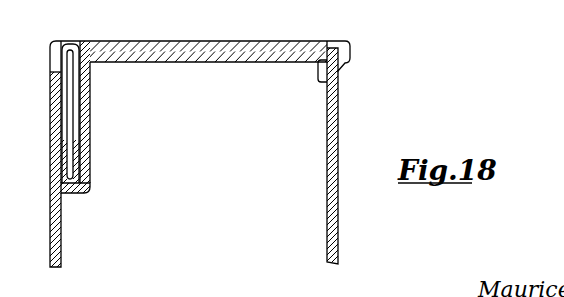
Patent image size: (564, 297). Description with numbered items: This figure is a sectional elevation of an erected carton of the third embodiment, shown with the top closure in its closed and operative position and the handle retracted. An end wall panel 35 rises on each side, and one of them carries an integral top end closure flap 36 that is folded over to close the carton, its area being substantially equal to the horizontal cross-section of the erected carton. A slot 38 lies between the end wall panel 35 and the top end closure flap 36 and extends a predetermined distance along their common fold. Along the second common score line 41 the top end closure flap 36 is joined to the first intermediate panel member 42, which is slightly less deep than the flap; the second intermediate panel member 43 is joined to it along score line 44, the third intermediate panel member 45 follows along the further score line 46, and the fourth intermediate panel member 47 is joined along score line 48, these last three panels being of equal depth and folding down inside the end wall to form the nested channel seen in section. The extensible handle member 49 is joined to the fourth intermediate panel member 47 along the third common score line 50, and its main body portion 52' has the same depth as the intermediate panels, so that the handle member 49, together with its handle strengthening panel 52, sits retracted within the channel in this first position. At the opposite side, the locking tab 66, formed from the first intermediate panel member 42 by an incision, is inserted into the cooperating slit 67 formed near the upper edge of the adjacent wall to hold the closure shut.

The end wall panel 35 is at (91, 241).
The top end closure flap 36 is at (148, 41).
The slot 38 is at (52, 60).
The second common score line 41 is at (327, 41).
The first intermediate panel member 42 is at (215, 62).
The second intermediate panel member 43 is at (90, 75).
The score line 44 is at (82, 52).
The third intermediate panel member 45 is at (90, 123).
The further score line 46 is at (90, 98).
The fourth intermediate panel member 47 is at (90, 172).
The score line 48 is at (90, 147).
The extensible handle member 49 is at (52, 170).
The third common score line 50 is at (73, 192).
The handle strengthening panel 52 is at (55, 78).
The main body portion 52' is at (50, 153).
The locking tab 66 is at (348, 53).
The slit 67 is at (339, 69).